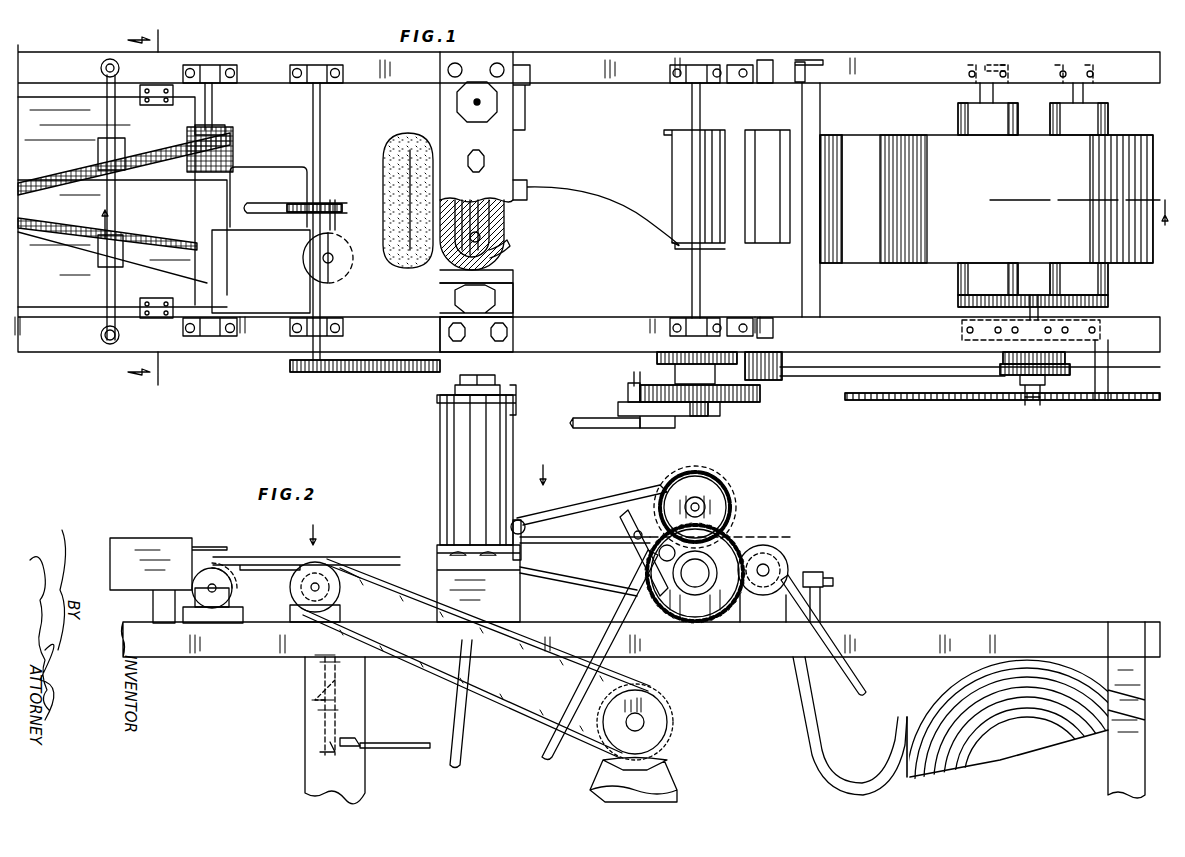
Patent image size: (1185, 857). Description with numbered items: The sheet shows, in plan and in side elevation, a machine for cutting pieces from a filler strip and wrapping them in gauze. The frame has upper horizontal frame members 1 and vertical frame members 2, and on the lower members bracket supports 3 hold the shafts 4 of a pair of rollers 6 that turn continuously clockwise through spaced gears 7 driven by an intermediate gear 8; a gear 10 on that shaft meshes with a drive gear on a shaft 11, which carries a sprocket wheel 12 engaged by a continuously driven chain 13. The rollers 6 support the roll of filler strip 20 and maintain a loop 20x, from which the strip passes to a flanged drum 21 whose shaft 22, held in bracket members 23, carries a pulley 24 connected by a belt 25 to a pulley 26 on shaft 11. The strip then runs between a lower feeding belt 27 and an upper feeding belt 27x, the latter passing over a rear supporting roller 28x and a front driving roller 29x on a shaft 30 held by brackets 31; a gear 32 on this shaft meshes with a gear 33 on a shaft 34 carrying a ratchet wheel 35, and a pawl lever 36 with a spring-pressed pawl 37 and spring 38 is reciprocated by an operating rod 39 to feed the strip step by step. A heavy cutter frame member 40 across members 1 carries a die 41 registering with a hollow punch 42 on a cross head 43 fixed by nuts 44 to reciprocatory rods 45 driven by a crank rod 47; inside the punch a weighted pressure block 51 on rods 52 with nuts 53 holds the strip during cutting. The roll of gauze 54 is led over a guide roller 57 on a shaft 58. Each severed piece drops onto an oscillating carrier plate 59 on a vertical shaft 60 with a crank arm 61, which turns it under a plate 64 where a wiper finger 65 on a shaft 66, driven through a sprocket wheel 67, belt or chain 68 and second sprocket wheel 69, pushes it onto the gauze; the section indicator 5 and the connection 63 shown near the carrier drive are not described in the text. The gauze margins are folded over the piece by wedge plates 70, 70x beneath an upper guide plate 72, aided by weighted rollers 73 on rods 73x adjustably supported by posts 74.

In FIG. 1, the upper horizontal frame member 1 is at (885, 52).
In FIG. 2, the upper horizontal frame member 1 is at (251, 625).
In FIG. 2, the vertical frame member 2 is at (308, 728).
In FIG. 1, the bracket support 3 is at (1038, 65).
In FIG. 1, the shaft 4 is at (1055, 93).
In FIG. 1, the feed tray 5 is at (637, 207).
In FIG. 1, the roller 6 is at (1108, 282).
In FIG. 1, the spaced gear 7 is at (1108, 300).
In FIG. 2, the spaced gear 7 is at (422, 502).
In FIG. 1, the intermediate gear 8 is at (1033, 295).
In FIG. 1, the gear 10 is at (1085, 366).
In FIG. 1, the shaft 11 is at (156, 209).
In FIG. 1, the sprocket wheel 12 is at (1020, 402).
In FIG. 1, the chain 13 is at (1002, 407).
In FIG. 1, the roll of filler strip 20 is at (1127, 135).
In FIG. 2, the roll of filler strip 20 is at (1017, 660).
In FIG. 1, the loop of filler strip 20x is at (874, 140).
In FIG. 1, the flanged drum 21 is at (764, 133).
In FIG. 2, the flanged drum 21 is at (785, 548).
In FIG. 1, the shaft 22 is at (758, 300).
In FIG. 1, the bracket member 23 is at (787, 57).
In FIG. 1, the pulley 24 is at (785, 357).
In FIG. 2, the pulley 24 is at (790, 560).
In FIG. 1, the belt 25 is at (820, 374).
In FIG. 2, the belt 25 is at (835, 612).
In FIG. 1, the pulley 26 is at (1050, 388).
In FIG. 2, the lower feeding belt 27 is at (585, 570).
In FIG. 2, the upper feeding belt 27x is at (585, 495).
In FIG. 1, the rear supporting roller 28x is at (527, 195).
In FIG. 1, the front supporting and driving roller 29x is at (704, 175).
In FIG. 1, the shaft 30 is at (700, 111).
In FIG. 2, the shaft 30 is at (702, 500).
In FIG. 1, the bracket 31 is at (698, 75).
In FIG. 1, the gear 32 is at (696, 368).
In FIG. 2, the gear 32 is at (720, 478).
In FIG. 2, the gear 33 is at (775, 545).
In FIG. 2, the shaft 34 is at (696, 587).
In FIG. 1, the ratchet wheel 35 is at (762, 393).
In FIG. 2, the ratchet wheel 35 is at (730, 610).
In FIG. 1, the pawl lever 36 is at (710, 418).
In FIG. 2, the pawl lever 36 is at (660, 520).
In FIG. 1, the pawl 37 is at (638, 370).
In FIG. 2, the pawl 37 is at (645, 555).
In FIG. 1, the spring 38 is at (628, 392).
In FIG. 2, the spring 38 is at (620, 530).
In FIG. 1, the operating rod 39 is at (612, 430).
In FIG. 2, the operating rod 39 is at (622, 618).
In FIG. 1, the cutter frame member 40 is at (512, 55).
In FIG. 2, the cutter frame member 40 is at (437, 580).
In FIG. 1, the die 41 is at (510, 272).
In FIG. 1, the punch 42 is at (507, 255).
In FIG. 2, the punch 42 is at (516, 520).
In FIG. 1, the cross head 43 is at (485, 188).
In FIG. 2, the cross head 43 is at (516, 395).
In FIG. 1, the nut 44 is at (460, 100).
In FIG. 2, the nut 44 is at (500, 380).
In FIG. 2, the reciprocatory rod 45 is at (445, 438).
In FIG. 2, the crank rod 47 is at (466, 725).
In FIG. 1, the weighted pressure block 51 is at (474, 227).
In FIG. 1, the rod 52 is at (480, 234).
In FIG. 1, the nut 53 is at (480, 152).
In FIG. 1, the roll of gauze 54 is at (232, 145).
In FIG. 2, the roll of gauze 54 is at (237, 592).
In FIG. 1, the guide roller 57 is at (223, 127).
In FIG. 2, the guide roller 57 is at (223, 580).
In FIG. 1, the shaft 58 is at (214, 117).
In FIG. 1, the carrier plate 59 is at (335, 245).
In FIG. 2, the carrier plate 59 is at (355, 565).
In FIG. 1, the vertical shaft 60 is at (330, 262).
In FIG. 2, the vertical shaft 60 is at (340, 690).
In FIG. 2, the crank arm 61 is at (360, 752).
In FIG. 2, the rod 63 is at (412, 738).
In FIG. 1, the plate 64 is at (272, 205).
In FIG. 2, the plate 64 is at (278, 555).
In FIG. 1, the wiper finger 65 is at (350, 200).
In FIG. 1, the shaft 66 is at (322, 108).
In FIG. 2, the shaft 66 is at (310, 585).
In FIG. 1, the sprocket wheel 67 is at (290, 364).
In FIG. 1, the belt or chain 68 is at (377, 370).
In FIG. 2, the belt or chain 68 is at (512, 700).
In FIG. 2, the second sprocket wheel 69 is at (660, 728).
In FIG. 1, the wedge plate 70 is at (145, 122).
In FIG. 1, the wedge plate 70x is at (110, 275).
In FIG. 2, the wedge plate 70x is at (177, 540).
In FIG. 1, the upper guide plate 72 is at (122, 243).
In FIG. 1, the weighted roller 73 is at (95, 148).
In FIG. 1, the rod 73x is at (105, 86).
In FIG. 1, the post 74 is at (120, 68).